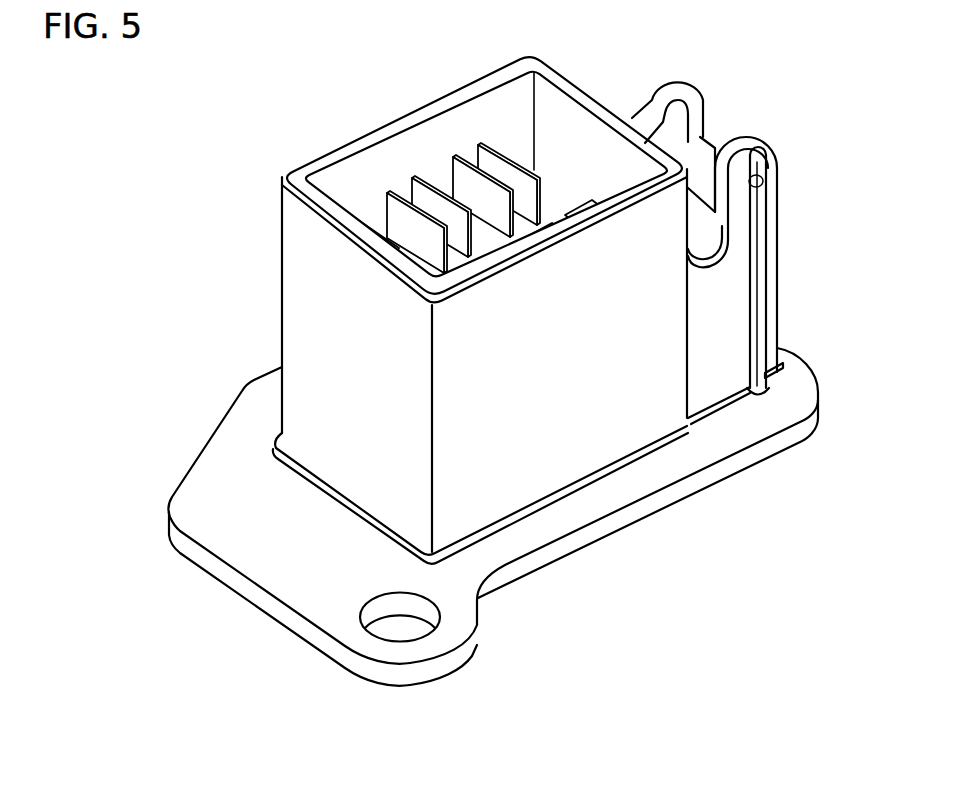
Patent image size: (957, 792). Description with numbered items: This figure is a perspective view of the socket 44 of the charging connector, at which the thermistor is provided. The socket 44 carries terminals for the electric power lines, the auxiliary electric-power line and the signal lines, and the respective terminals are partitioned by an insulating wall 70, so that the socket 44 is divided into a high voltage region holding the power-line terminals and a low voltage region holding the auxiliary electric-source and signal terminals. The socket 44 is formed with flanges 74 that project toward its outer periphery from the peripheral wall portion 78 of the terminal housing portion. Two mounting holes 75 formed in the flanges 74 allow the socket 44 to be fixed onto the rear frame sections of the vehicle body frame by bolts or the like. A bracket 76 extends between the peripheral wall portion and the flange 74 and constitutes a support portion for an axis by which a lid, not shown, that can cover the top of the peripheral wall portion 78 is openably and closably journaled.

The socket 44 is at (697, 502).
The insulating wall 70 is at (352, 210).
The flange 74 is at (515, 538).
The mounting hole 75 is at (404, 640).
The bracket 76 is at (712, 302).
The peripheral wall portion 78 is at (598, 103).